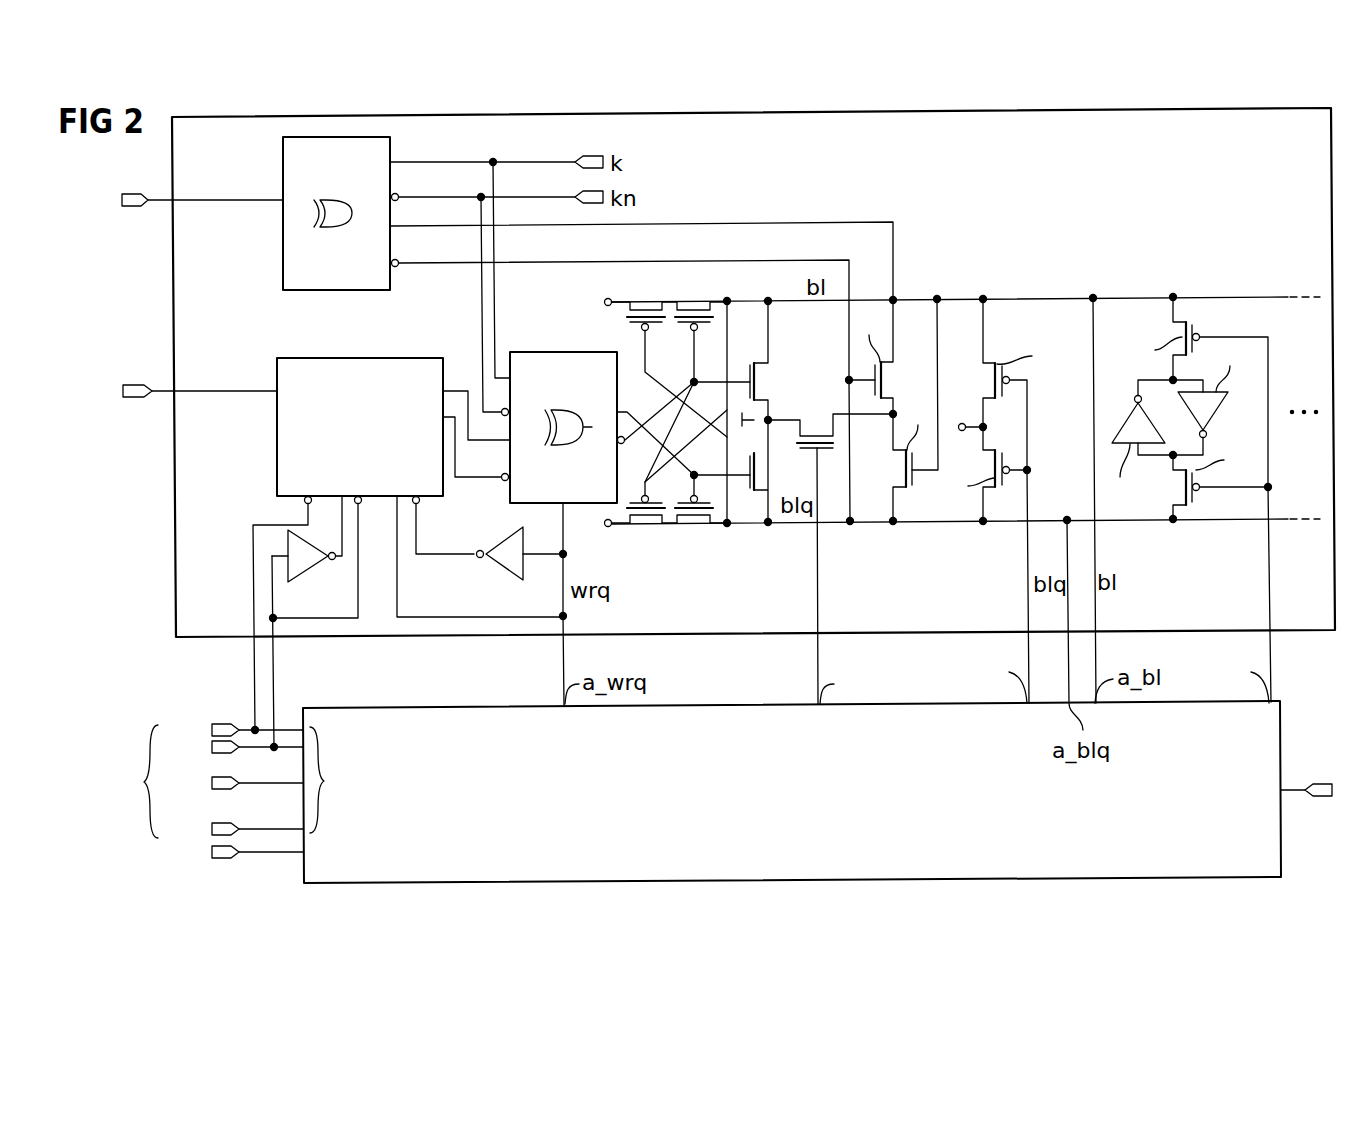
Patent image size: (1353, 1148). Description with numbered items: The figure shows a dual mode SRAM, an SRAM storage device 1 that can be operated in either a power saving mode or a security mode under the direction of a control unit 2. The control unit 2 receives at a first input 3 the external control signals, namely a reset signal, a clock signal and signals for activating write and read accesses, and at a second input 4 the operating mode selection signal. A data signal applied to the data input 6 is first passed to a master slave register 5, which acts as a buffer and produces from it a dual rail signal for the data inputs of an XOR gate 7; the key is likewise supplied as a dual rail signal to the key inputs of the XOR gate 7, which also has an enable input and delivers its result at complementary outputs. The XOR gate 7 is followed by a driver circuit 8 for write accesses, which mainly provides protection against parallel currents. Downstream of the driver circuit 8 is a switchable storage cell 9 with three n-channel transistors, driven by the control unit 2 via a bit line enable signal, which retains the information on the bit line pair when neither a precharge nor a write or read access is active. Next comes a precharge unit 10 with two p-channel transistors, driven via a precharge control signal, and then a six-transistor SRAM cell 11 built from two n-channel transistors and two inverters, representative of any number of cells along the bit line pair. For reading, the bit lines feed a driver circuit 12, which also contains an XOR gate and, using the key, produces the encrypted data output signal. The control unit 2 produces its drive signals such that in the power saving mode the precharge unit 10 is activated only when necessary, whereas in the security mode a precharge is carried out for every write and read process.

The SRAM storage device 1 is at (175, 538).
The control unit 2 is at (1283, 758).
The first input 3 is at (205, 779).
The second input 4 is at (303, 852).
The master slave register 5 is at (277, 433).
The data input 6 is at (172, 388).
The XOR gate 7 is at (565, 352).
The driver circuit 8 is at (726, 291).
The switchable storage cell 9 is at (906, 286).
The precharge unit 10 is at (1015, 284).
The 6-transistor SRAM cell 11 is at (1199, 289).
The driver circuit 12 is at (283, 248).